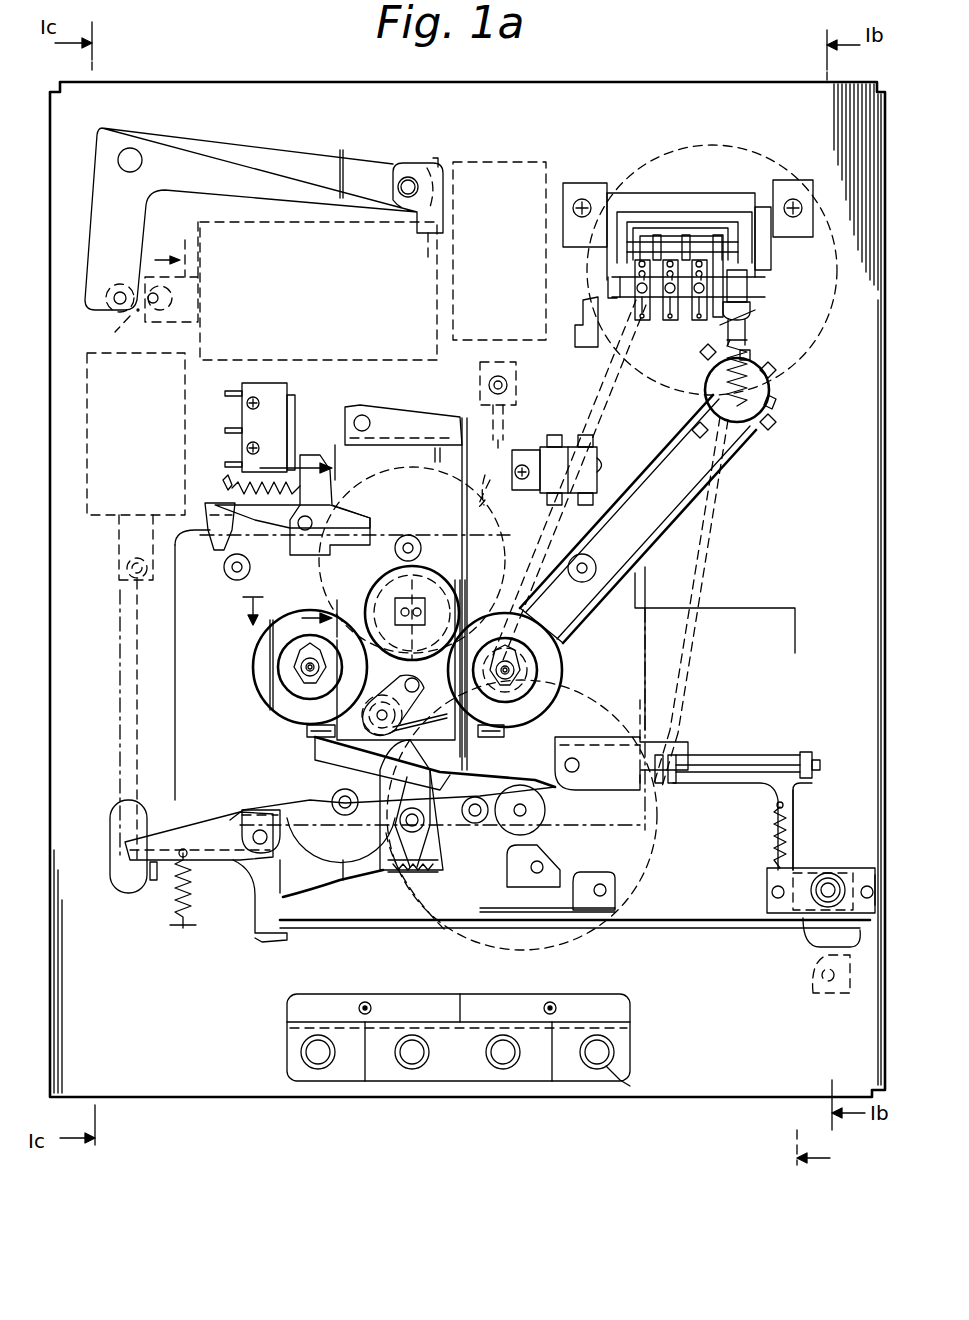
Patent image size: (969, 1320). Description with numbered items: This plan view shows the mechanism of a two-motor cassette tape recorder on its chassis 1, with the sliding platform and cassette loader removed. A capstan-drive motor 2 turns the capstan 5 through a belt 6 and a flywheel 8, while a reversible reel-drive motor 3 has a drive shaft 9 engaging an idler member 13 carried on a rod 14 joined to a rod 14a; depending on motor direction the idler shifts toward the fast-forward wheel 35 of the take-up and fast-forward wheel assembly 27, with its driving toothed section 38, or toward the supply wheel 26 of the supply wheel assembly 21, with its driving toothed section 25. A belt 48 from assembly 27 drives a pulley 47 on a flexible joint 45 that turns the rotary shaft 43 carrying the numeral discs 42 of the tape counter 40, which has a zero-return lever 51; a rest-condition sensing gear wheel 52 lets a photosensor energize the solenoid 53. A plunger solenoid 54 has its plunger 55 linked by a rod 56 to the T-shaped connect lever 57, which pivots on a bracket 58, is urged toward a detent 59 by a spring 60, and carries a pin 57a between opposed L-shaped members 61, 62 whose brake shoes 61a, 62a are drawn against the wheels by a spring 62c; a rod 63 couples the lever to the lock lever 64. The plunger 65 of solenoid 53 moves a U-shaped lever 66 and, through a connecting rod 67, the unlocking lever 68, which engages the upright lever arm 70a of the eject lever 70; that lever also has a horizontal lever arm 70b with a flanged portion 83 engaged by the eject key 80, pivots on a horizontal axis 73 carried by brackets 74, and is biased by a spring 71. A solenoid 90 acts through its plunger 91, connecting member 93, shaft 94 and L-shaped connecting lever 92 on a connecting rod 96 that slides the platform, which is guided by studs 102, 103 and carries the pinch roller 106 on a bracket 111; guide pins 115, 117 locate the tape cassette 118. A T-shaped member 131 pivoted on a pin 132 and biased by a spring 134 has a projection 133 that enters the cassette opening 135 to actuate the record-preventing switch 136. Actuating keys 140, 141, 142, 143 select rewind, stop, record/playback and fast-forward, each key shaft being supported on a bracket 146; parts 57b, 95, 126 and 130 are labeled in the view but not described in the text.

The chassis 1 is at (745, 90).
The capstan-drive motor 2 is at (800, 350).
The reel-drive motor 3 is at (665, 817).
The capstan 5 is at (526, 810).
The belt 6 is at (690, 640).
The flywheel 8 is at (600, 700).
The drive shaft 9 is at (408, 535).
The idler member 13 is at (385, 572).
The rod 14 is at (425, 605).
The rod 14a is at (385, 735).
The supply wheel assembly 21 is at (255, 599).
The driving toothed section 25 is at (300, 690).
The supply wheel 26 is at (508, 640).
The take-up and fast-forward wheel assembly 27 is at (553, 624).
The fast-forward wheel 35 is at (252, 660).
The driving toothed section 38 is at (505, 675).
The tape counter 40 is at (757, 268).
The numeral discs 42 is at (671, 323).
The rotary shaft 43 is at (630, 300).
The flexible joint 45 is at (765, 390).
The pulley 47 is at (745, 300).
The belt 48 is at (690, 520).
The zero-return lever 51 is at (590, 350).
The rest-condition sensing gear wheel 52 is at (770, 430).
The solenoid 53 is at (511, 272).
The plunger solenoid 54 is at (144, 452).
The plunger 55 is at (118, 590).
The rod 56 is at (125, 718).
The connect lever 57 is at (320, 855).
The pin 57a is at (430, 872).
The lever end 57b is at (120, 870).
The bracket 58 is at (285, 800).
The detent 59 is at (153, 880).
The spring 60 is at (190, 900).
The L shaped pivoted member 61 is at (392, 778).
The brake shoe 61a is at (300, 745).
The L shaped member 62 is at (443, 850).
The brake shoe 62a is at (504, 735).
The spring 62c is at (420, 905).
The rod 63 is at (352, 930).
The lock lever 64 is at (810, 985).
The plunger 65 is at (516, 370).
The U shaped lever 66 is at (398, 407).
The connecting rod 67 is at (465, 494).
The unlocking lever 68 is at (625, 770).
The eject lever 70 is at (745, 783).
The upright lever arm 70a is at (672, 783).
The horizontal lever arm 70b is at (807, 810).
The spring 71 is at (774, 840).
The horizontal axis 73 is at (745, 755).
The brackets 74 is at (808, 752).
The eject key 80 is at (826, 872).
The flanged portion 83 is at (872, 868).
The solenoid 90 is at (318, 316).
The plunger 91 is at (183, 250).
The L shaped connecting lever 92 is at (222, 152).
The connecting member 93 is at (118, 329).
The shaft 94 is at (120, 292).
The hole 95 is at (130, 160).
The connecting rod 96 is at (428, 175).
The stud 102 is at (237, 580).
The stud 103 is at (592, 558).
The pinch roller 106 is at (520, 880).
The bracket 111 is at (593, 870).
The guide pin 115 is at (333, 806).
The guide pin 117 is at (480, 822).
The tape cassette 118 is at (665, 626).
The switch 126 is at (565, 445).
The switch 130 is at (595, 447).
The T shaped member 131 is at (310, 455).
The pin 132 is at (305, 530).
The projection 133 is at (218, 552).
The spring 134 is at (232, 485).
The opening 135 is at (200, 540).
The switch 136 is at (242, 412).
The actuating key 140 is at (300, 1055).
The actuating key 141 is at (430, 1048).
The actuating key 142 is at (486, 1058).
The actuating key 143 is at (638, 1078).
The bracket 146 is at (615, 1056).